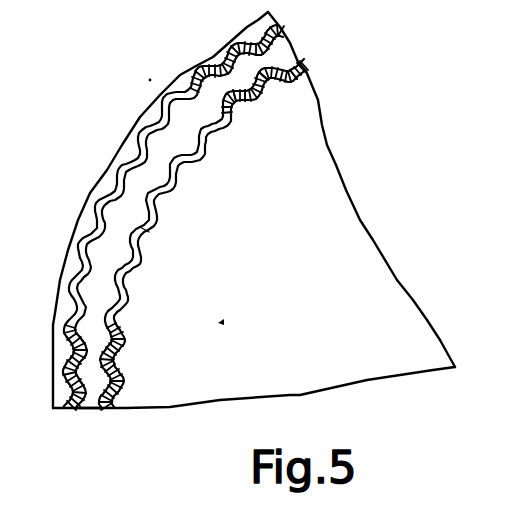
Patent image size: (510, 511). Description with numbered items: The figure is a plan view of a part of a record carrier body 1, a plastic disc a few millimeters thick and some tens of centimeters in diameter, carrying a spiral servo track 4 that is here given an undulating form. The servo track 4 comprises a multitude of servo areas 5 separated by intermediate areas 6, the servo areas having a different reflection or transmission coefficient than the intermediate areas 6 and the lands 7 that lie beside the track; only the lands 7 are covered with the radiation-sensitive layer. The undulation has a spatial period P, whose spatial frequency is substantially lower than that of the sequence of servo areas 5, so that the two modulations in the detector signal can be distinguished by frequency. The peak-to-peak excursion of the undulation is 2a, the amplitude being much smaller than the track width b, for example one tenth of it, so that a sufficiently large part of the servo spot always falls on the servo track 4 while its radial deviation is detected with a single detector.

The record carrier body 1 is at (367, 164).
The servo track 4 is at (301, 66).
The servo areas 5 is at (248, 98).
The intermediate areas 6 is at (284, 69).
The lands 7 is at (89, 397).
The width of the servo track b is at (150, 232).
The period of the undulation P is at (15, 353).
The twice the amplitude of the servo-track undulation 2a is at (101, 410).